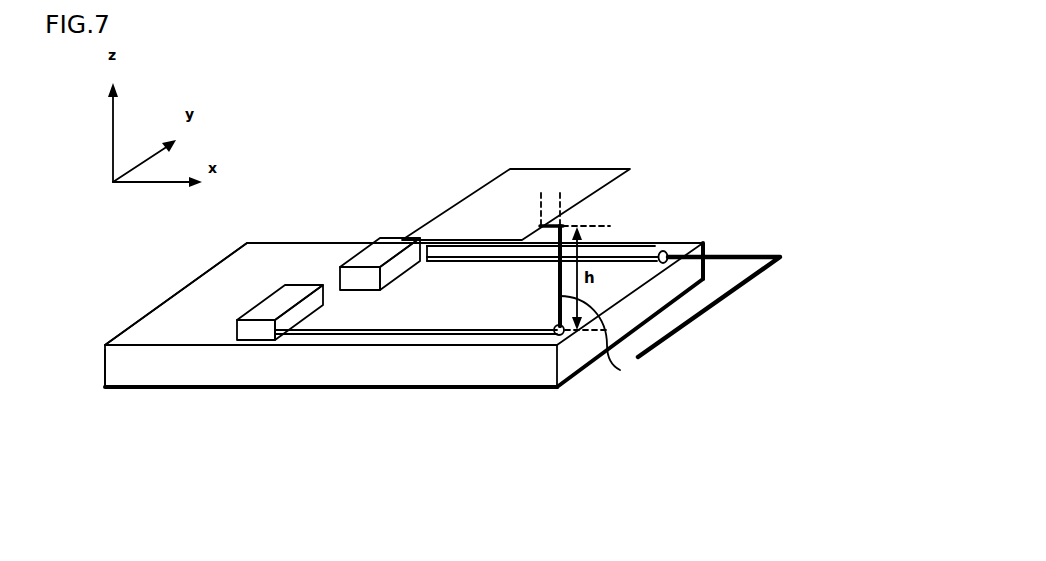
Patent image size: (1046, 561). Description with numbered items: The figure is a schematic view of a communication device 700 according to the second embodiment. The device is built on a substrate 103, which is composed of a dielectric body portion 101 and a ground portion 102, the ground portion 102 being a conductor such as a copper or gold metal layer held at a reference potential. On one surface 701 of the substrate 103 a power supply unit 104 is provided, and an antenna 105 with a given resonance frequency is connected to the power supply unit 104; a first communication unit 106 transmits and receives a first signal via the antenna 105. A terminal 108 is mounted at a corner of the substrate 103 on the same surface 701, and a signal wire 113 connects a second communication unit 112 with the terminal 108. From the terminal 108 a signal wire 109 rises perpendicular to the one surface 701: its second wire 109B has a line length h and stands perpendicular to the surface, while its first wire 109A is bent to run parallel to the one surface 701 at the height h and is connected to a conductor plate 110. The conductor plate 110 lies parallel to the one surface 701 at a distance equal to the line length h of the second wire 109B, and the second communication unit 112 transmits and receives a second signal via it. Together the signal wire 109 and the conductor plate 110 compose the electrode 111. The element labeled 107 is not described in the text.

The communication device 700 is at (645, 69).
The one surface 701 is at (168, 300).
The dielectric body portion 101 is at (122, 371).
The ground portion 102 is at (208, 387).
The substrate 103 is at (235, 455).
The power supply unit 104 is at (668, 250).
The antenna 105 is at (742, 253).
The first communication unit 106 is at (380, 257).
The radiating plate 107 is at (637, 253).
The terminal 108 is at (557, 383).
The signal wire 109 is at (557, 226).
The first wire 109A is at (557, 225).
The second wire 109B is at (620, 370).
The conductor plate 110 is at (503, 230).
The electrode 111 is at (575, 477).
The second communication unit 112 is at (285, 300).
The signal wire 113 is at (332, 335).